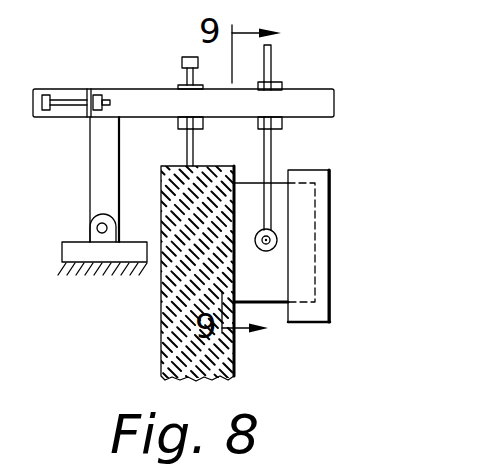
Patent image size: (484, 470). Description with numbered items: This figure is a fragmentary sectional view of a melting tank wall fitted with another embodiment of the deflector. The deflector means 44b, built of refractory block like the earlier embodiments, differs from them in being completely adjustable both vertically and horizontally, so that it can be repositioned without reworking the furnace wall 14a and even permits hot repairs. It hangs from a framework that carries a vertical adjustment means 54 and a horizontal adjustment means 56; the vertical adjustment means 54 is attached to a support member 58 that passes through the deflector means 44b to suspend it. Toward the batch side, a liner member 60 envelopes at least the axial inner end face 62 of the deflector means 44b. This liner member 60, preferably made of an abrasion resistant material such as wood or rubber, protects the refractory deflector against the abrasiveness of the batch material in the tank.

The furnace wall 14a is at (154, 345).
The deflector means 44b is at (273, 292).
The vertical adjustment means 54 is at (273, 65).
The horizontal adjustment means 56 is at (130, 100).
The support member 58 is at (261, 250).
The liner member 60 is at (320, 265).
The axial inner end face 62 is at (315, 220).